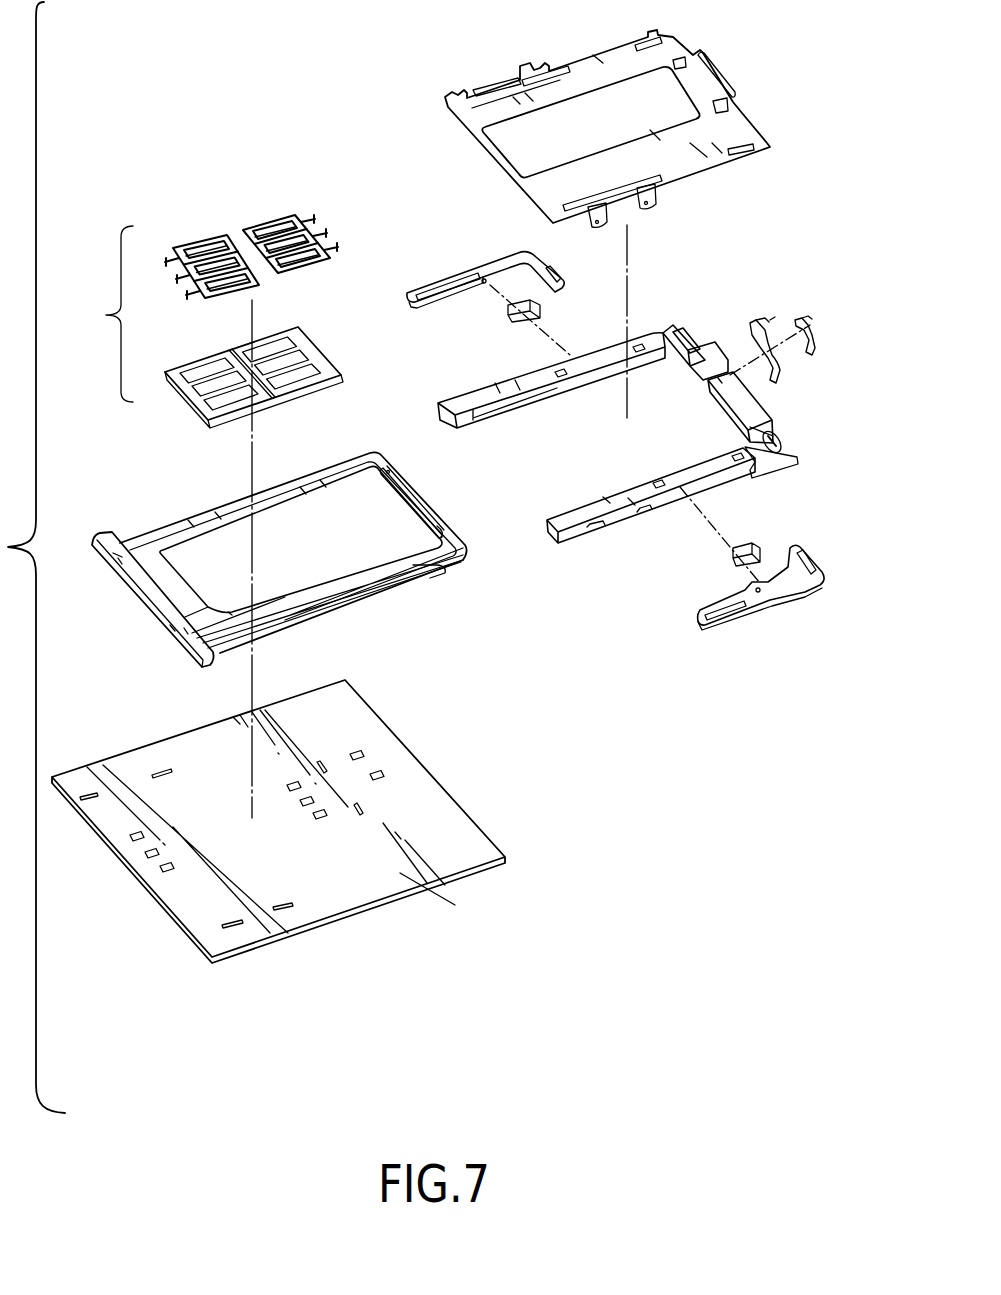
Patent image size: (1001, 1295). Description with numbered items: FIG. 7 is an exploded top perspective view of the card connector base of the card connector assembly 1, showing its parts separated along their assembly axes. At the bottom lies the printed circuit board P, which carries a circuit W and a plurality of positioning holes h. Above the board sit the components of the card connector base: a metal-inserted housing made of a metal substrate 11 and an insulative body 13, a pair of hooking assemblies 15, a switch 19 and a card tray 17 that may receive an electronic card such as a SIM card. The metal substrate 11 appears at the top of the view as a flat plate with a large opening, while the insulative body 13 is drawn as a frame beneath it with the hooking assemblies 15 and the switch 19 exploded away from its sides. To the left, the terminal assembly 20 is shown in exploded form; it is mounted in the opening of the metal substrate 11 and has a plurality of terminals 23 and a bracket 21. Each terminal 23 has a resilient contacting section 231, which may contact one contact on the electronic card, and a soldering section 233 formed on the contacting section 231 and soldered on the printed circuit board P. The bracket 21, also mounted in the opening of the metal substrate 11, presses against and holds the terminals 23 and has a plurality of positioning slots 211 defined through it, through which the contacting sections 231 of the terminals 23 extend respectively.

The card connector assembly 1 is at (138, 86).
The metal substrate 11 is at (768, 79).
The insulative body 13 is at (803, 425).
The hooking assemblies 15 is at (824, 535).
The card tray 17 is at (128, 620).
The switch 19 is at (808, 300).
The terminal assembly 20 is at (217, 312).
The bracket 21 is at (223, 392).
The positioning slots 211 is at (202, 372).
The terminals 23 is at (255, 224).
The contacting section 231 is at (283, 215).
The soldering section 233 is at (317, 218).
The circuit w is at (360, 753).
The positioning holes h is at (88, 795).
The printed circuit board p is at (273, 830).